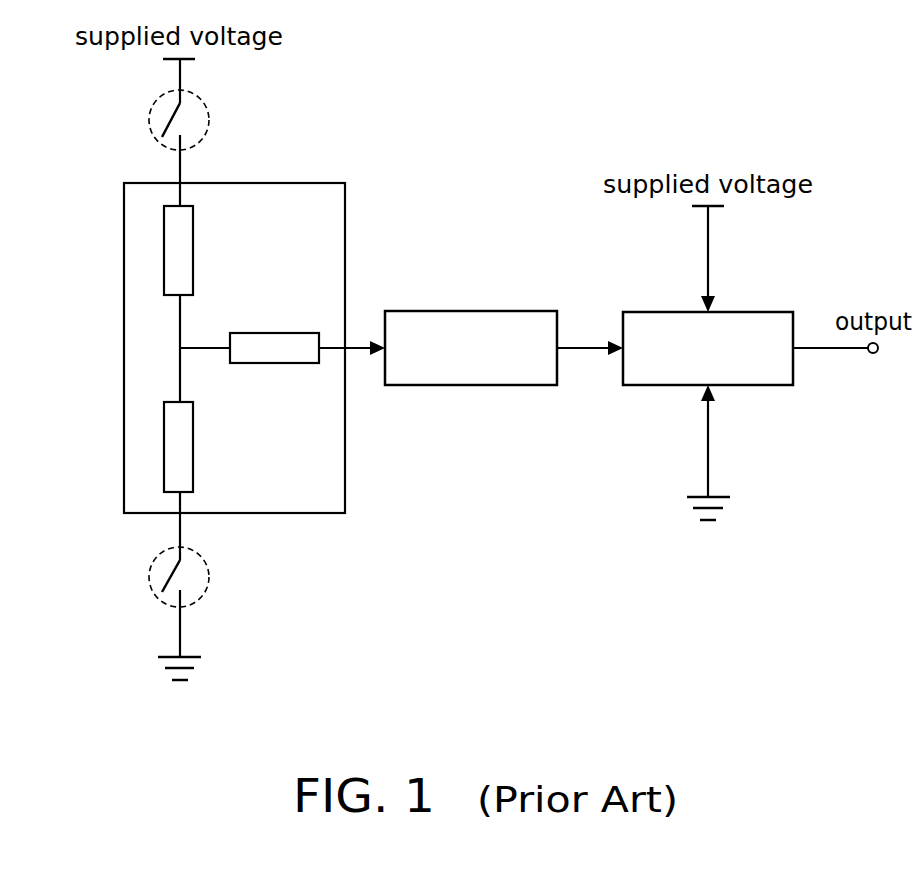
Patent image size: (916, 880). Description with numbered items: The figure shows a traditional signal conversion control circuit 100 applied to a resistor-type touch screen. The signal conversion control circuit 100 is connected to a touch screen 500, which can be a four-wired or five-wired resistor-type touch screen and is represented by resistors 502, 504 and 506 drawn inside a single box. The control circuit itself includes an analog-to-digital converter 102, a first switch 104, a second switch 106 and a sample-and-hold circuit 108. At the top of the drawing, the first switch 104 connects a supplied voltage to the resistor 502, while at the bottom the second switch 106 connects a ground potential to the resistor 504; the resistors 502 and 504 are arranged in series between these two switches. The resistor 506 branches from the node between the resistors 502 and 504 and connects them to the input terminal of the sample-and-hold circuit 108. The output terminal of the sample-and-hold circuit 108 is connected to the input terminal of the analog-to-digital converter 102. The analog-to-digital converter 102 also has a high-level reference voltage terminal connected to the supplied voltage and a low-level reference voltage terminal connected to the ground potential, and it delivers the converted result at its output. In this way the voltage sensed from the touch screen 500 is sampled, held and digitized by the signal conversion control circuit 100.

The signal conversion control circuit 100 is at (576, 622).
The analog-to-digital converter 102 is at (770, 312).
The first switch 104 is at (212, 118).
The second switch 106 is at (210, 575).
The sample-and-hold circuit 108 is at (472, 311).
The touch screen 500 is at (124, 347).
The resistor 502 is at (194, 223).
The resistor 504 is at (194, 438).
The resistor 506 is at (275, 333).